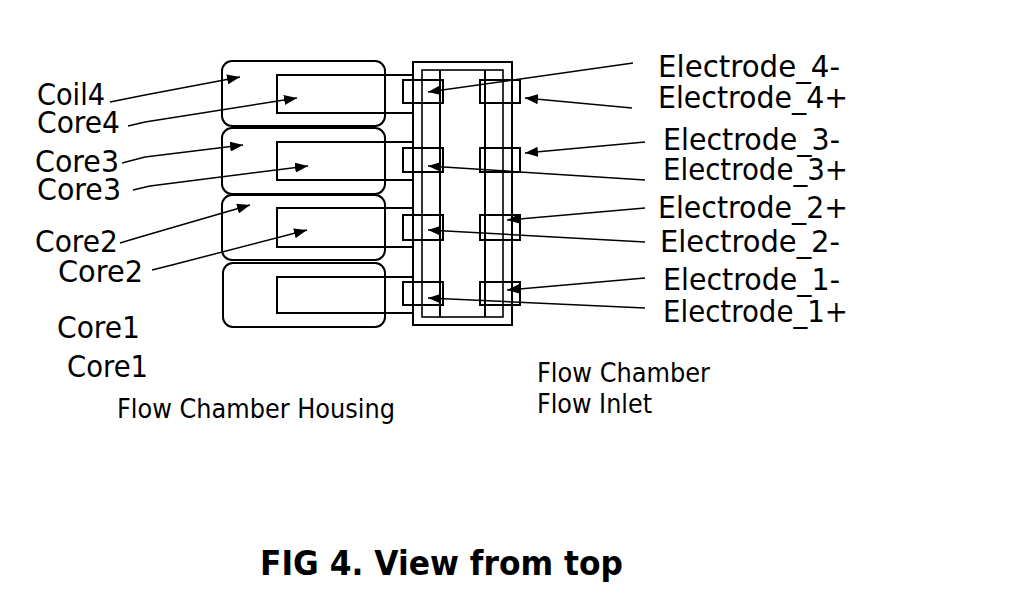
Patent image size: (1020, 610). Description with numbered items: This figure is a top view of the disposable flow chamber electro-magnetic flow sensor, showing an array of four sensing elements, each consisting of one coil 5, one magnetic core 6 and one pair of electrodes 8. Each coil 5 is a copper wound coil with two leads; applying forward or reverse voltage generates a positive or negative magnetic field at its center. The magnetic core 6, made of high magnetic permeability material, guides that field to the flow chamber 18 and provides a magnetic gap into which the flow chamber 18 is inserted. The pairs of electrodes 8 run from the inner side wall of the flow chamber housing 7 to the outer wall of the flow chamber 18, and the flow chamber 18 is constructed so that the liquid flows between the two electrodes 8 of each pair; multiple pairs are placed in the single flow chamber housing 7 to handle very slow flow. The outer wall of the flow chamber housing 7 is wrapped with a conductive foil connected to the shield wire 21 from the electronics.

The coil 5 is at (243, 297).
The magnetic core 6 is at (307, 303).
The flow chamber housing 7 is at (433, 258).
The pair of electrodes 8 is at (563, 295).
The flow chamber 18 is at (467, 324).
The shield wire 21 is at (418, 62).